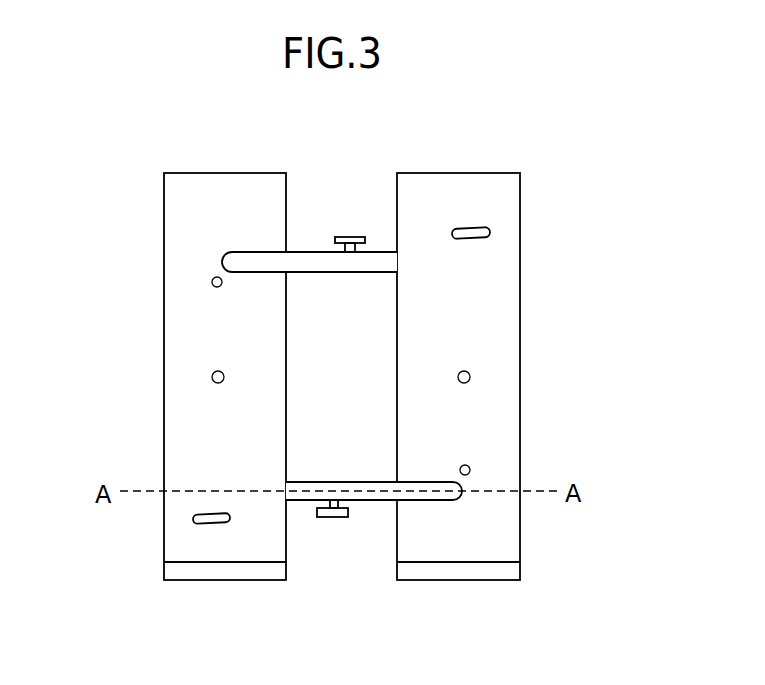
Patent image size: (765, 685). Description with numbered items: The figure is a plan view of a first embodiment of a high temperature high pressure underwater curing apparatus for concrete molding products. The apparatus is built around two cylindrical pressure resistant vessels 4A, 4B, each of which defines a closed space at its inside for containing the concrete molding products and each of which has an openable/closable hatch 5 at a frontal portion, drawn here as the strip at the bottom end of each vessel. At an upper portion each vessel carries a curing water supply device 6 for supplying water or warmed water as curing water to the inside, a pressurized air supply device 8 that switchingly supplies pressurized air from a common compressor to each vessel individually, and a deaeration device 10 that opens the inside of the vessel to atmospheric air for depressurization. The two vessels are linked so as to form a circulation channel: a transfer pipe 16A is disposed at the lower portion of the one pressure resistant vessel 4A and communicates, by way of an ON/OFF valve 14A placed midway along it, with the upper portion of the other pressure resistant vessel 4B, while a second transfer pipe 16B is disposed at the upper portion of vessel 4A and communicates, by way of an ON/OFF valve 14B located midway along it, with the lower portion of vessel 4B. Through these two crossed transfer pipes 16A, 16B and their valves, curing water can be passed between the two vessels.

The pressure resistant vessel 4A is at (163, 315).
The pressure resistant vessel 4B is at (521, 319).
The hatch 5 is at (218, 580).
The curing water supply device 6 is at (212, 283).
The pressurized air supply device 8 is at (212, 377).
The deaeration device 10 is at (470, 231).
The ON/OFF valve 14A is at (333, 518).
The ON/OFF valve 14B is at (350, 237).
The transfer pipe 16A is at (320, 482).
The transfer pipe 16B is at (302, 252).